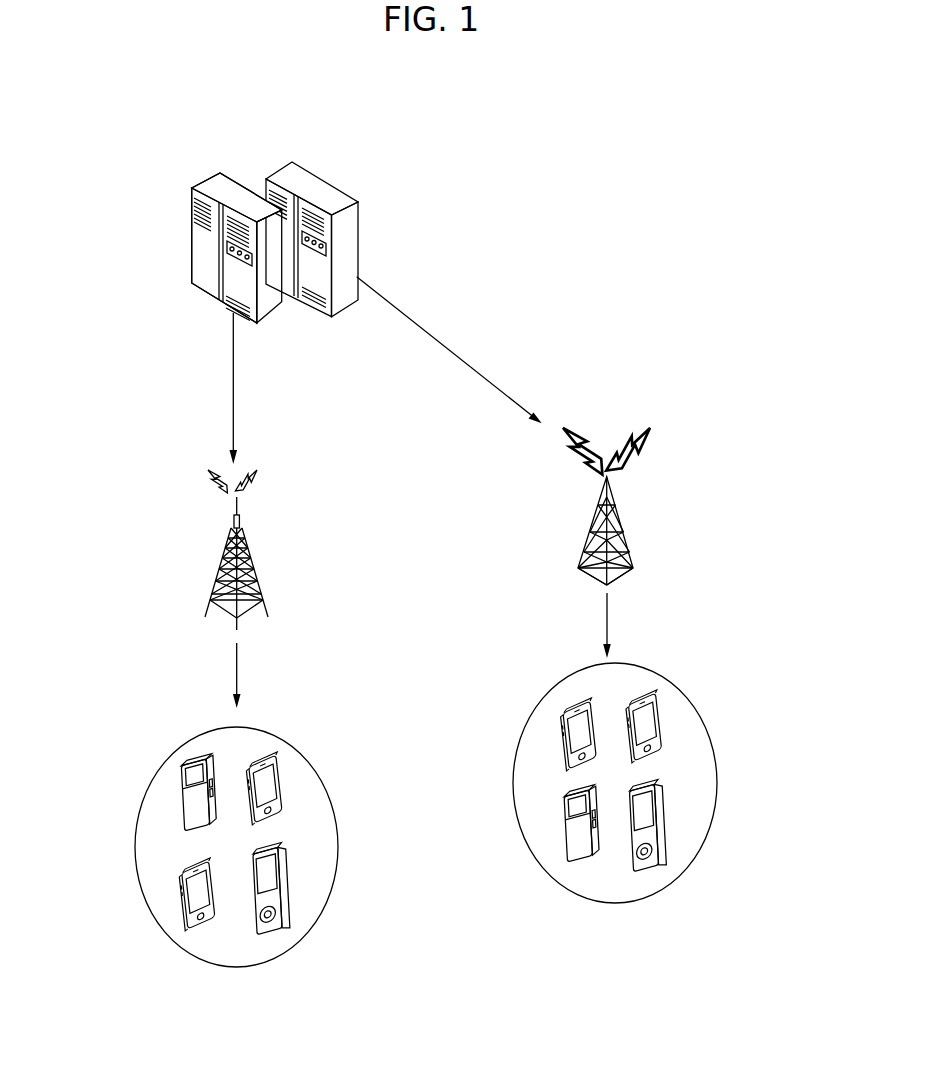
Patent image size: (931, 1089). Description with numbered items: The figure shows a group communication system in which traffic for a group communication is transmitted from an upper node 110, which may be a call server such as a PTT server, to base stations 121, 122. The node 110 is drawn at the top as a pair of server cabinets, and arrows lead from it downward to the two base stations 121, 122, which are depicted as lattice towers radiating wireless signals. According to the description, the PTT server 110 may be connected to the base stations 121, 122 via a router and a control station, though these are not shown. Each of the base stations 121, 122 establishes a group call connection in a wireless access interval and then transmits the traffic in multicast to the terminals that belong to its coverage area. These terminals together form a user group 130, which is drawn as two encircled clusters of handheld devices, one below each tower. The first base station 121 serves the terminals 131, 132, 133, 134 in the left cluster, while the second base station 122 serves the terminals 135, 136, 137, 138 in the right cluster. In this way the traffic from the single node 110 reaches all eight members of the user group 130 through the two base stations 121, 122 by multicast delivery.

The node 110 is at (249, 155).
The base station 121 is at (230, 552).
The base station 122 is at (622, 517).
The user group 130 is at (235, 967).
The terminal 131 is at (187, 790).
The terminal 132 is at (190, 930).
The terminal 133 is at (285, 928).
The terminal 134 is at (273, 778).
The terminal 135 is at (573, 730).
The terminal 136 is at (582, 840).
The terminal 137 is at (658, 877).
The terminal 138 is at (655, 703).